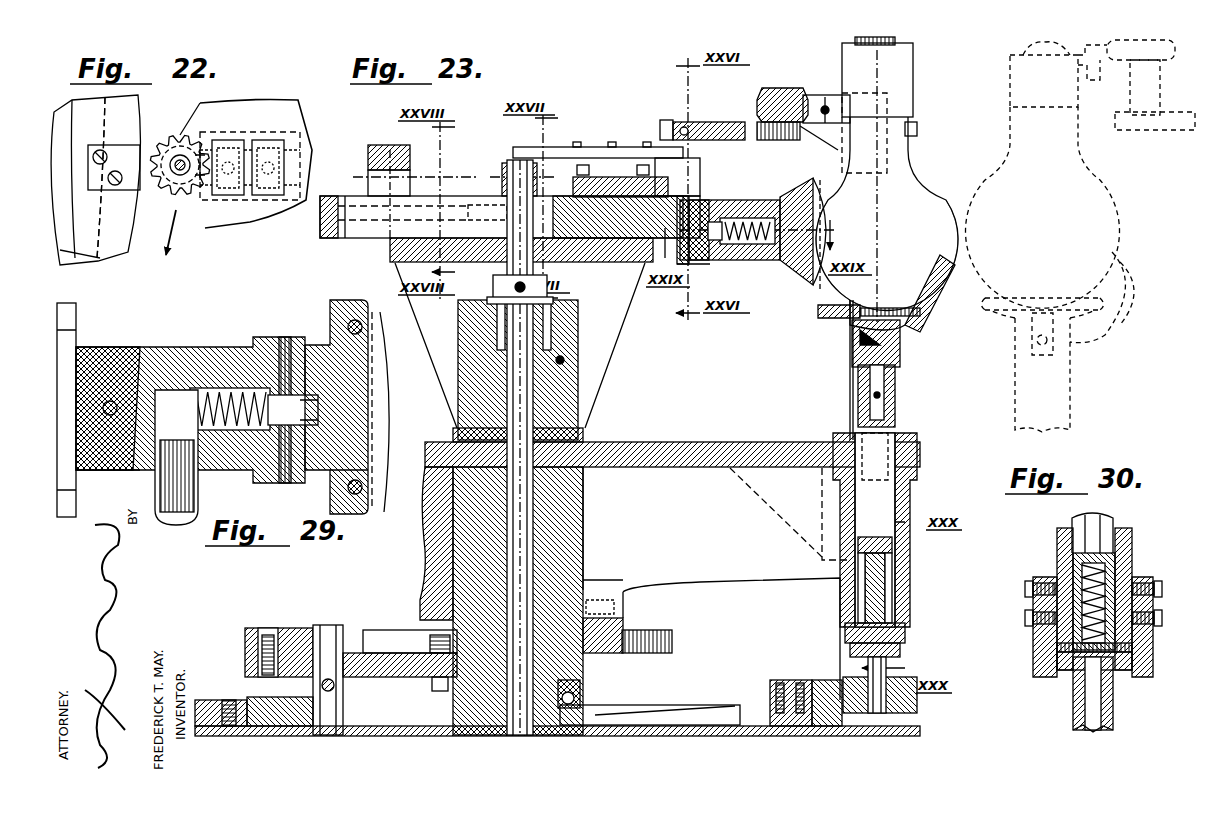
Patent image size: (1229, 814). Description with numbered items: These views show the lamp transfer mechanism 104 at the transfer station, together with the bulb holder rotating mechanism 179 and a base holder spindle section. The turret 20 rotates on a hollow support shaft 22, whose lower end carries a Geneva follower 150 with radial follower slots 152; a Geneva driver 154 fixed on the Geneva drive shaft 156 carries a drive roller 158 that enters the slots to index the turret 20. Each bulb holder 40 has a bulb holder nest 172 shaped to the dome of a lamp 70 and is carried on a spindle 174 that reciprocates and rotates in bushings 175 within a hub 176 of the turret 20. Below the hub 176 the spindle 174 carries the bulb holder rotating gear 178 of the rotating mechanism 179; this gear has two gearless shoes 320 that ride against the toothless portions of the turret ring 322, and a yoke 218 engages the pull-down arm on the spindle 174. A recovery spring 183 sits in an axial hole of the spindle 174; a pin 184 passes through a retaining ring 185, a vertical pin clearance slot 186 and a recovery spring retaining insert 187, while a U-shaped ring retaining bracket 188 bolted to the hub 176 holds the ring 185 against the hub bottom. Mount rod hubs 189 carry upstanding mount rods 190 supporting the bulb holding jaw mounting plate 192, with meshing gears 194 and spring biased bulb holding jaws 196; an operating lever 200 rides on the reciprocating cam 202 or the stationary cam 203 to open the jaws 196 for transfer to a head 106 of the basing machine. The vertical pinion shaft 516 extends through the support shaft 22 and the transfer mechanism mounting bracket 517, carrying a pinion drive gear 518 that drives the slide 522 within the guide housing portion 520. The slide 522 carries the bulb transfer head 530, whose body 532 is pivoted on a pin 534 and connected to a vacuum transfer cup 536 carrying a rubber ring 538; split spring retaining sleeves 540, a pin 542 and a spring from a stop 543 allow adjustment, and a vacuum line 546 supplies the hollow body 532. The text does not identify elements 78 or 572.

In FIG. 22, the turret 20 is at (84, 250).
In FIG. 23, the turret 20 is at (672, 445).
In FIG. 23, the hollow support shaft 22 is at (583, 505).
In FIG. 23, the bulb holder 40 is at (925, 332).
In FIG. 29, the lamp 70 is at (387, 410).
In FIG. 23, the lamp 70 is at (945, 195).
In FIG. 23, the bottle neck 78 is at (912, 85).
In FIG. 23, the lamp transfer mechanism 104 is at (652, 152).
In FIG. 23, the head of the basing machine 106 is at (1122, 310).
In FIG. 23, the Geneva driven gear or maltese cross follower 150 is at (618, 653).
In FIG. 23, the radial follower slots 152 is at (673, 640).
In FIG. 23, the Geneva drive gear or driver 154 is at (245, 640).
In FIG. 23, the Geneva drive shaft 156 is at (330, 628).
In FIG. 23, the drive roller 158 is at (425, 640).
In FIG. 23, the bulb holder nest 172 is at (935, 285).
In FIG. 22, the bulb holder shaft or spindle 174 is at (186, 180).
In FIG. 23, the bulb holder shaft or spindle 174 is at (897, 392).
In FIG. 30, the bulb holder shaft or spindle 174 is at (1085, 538).
In FIG. 23, the bushings 175 is at (918, 476).
In FIG. 23, the hub 176 is at (895, 548).
In FIG. 30, the hub 176 is at (1133, 540).
In FIG. 22, the bulb holder rotating gear 178 is at (208, 174).
In FIG. 23, the bulb holder rotating gear 178 is at (918, 705).
In FIG. 22, the bulb holder rotating mechanism 179 is at (136, 243).
In FIG. 30, the recovery spring 183 is at (1118, 560).
In FIG. 23, the pin 184 is at (842, 662).
In FIG. 30, the pin 184 is at (1128, 665).
In FIG. 23, the retaining ring 185 is at (907, 634).
In FIG. 30, the retaining ring 185 is at (1150, 648).
In FIG. 30, the vertical pin clearance slot 186 is at (1148, 600).
In FIG. 30, the recovery spring retaining insert 187 is at (1073, 694).
In FIG. 23, the ring retaining bracket 188 is at (902, 656).
In FIG. 30, the ring retaining bracket 188 is at (1045, 645).
In FIG. 23, the mount rod hubs 189 is at (822, 525).
In FIG. 23, the mount rod 190 is at (850, 392).
In FIG. 23, the bulb holding jaw mounting plate 192 is at (760, 104).
In FIG. 23, the meshing gears 194 is at (772, 140).
In FIG. 23, the bulb holding jaws 196 is at (920, 128).
In FIG. 23, the operating lever 200 is at (712, 141).
In FIG. 23, the reciprocating cam 202 is at (603, 147).
In FIG. 23, the stationary cam 203 is at (368, 148).
In FIG. 22, the yoke 218 is at (227, 156).
In FIG. 22, the gearless segments or shoes 320 is at (146, 155).
In FIG. 22, the turret ring 322 is at (118, 250).
In FIG. 23, the turret ring 322 is at (225, 700).
In FIG. 23, the vertical pinion shaft 516 is at (585, 552).
In FIG. 23, the transfer mechanism mounting bracket 517 is at (615, 357).
In FIG. 23, the pinion drive gear 518 is at (500, 170).
In FIG. 23, the guide housing portion 520 is at (392, 255).
In FIG. 23, the slide 522 is at (322, 235).
In FIG. 29, the bulb transfer head 530 is at (243, 334).
In FIG. 23, the bulb transfer head 530 is at (792, 278).
In FIG. 29, the body 532 is at (187, 352).
In FIG. 23, the body 532 is at (740, 210).
In FIG. 29, the pin 534 is at (108, 470).
In FIG. 23, the pin 534 is at (690, 264).
In FIG. 29, the vacuum transfer cup 536 is at (333, 315).
In FIG. 29, the rubber ring 538 is at (364, 512).
In FIG. 23, the rubber ring 538 is at (826, 188).
In FIG. 29, the spring retaining sleeves or spring holders 540 is at (305, 415).
In FIG. 23, the spring retaining sleeves or spring holders 540 is at (755, 245).
In FIG. 29, the pin 542 is at (285, 337).
In FIG. 29, the stop 543 is at (142, 372).
In FIG. 23, the stop 543 is at (705, 210).
In FIG. 29, the vacuum line 546 is at (160, 488).
In FIG. 29, the mounting flange 572 is at (76, 312).